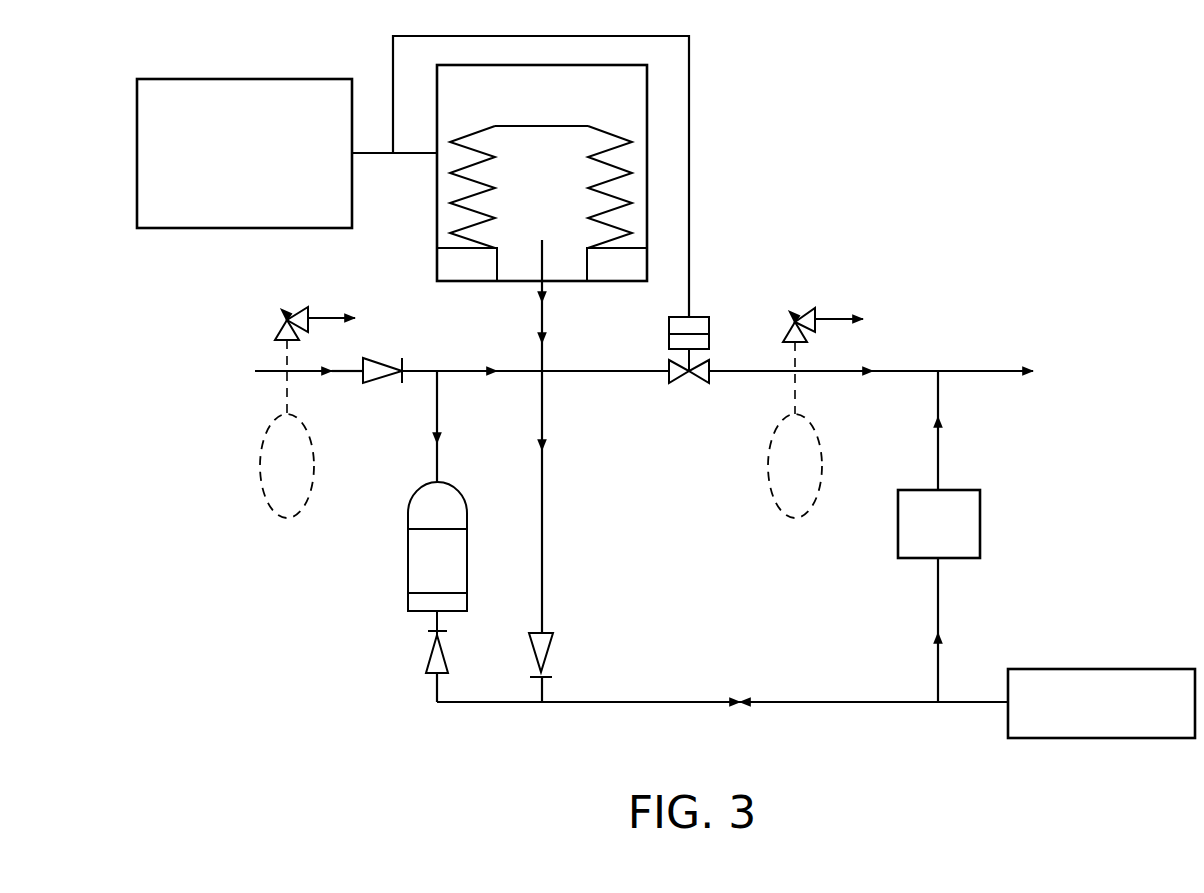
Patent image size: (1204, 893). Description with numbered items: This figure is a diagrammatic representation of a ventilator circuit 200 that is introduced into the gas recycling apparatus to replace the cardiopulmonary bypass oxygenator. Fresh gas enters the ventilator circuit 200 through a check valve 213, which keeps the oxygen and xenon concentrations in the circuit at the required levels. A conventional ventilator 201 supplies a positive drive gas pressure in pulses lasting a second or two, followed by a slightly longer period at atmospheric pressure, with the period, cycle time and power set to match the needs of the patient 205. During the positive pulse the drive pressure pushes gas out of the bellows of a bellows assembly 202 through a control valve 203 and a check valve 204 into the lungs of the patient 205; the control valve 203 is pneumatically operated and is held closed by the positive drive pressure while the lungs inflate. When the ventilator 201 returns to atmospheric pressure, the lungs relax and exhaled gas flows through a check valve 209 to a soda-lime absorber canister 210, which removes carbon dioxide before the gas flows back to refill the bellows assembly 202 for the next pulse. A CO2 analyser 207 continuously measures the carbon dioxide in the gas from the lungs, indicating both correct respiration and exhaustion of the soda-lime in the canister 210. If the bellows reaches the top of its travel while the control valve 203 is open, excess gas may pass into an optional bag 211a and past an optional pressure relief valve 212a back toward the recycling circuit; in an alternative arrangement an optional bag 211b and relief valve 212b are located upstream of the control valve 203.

The ventilator circuit 200 is at (943, 210).
The ventilator 201 is at (217, 165).
The bellows assembly 202 is at (514, 111).
The control valve 203 is at (690, 383).
The check valve 204 is at (548, 650).
The patient 205 is at (1082, 720).
The CO2 analyser 207 is at (921, 531).
The check valve 209 is at (430, 663).
The soda-lime absorber canister 210 is at (423, 567).
The bag 211a is at (807, 451).
The bag 211b is at (272, 468).
The pressure relief valve 212a is at (797, 312).
The relief valve 212b is at (307, 307).
The check valve 213 is at (385, 362).